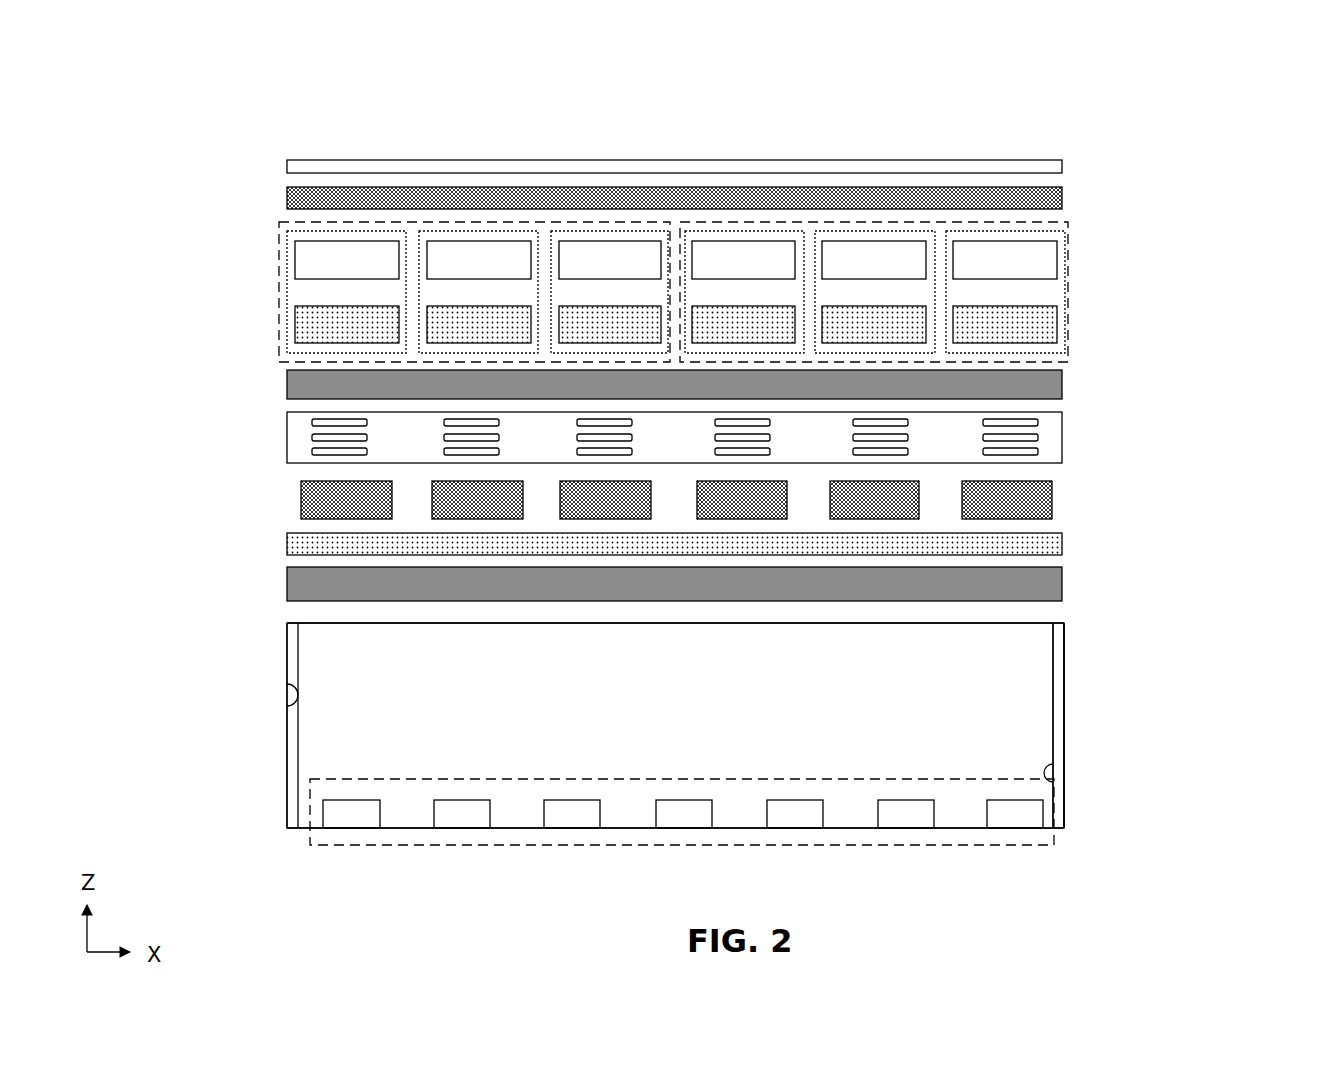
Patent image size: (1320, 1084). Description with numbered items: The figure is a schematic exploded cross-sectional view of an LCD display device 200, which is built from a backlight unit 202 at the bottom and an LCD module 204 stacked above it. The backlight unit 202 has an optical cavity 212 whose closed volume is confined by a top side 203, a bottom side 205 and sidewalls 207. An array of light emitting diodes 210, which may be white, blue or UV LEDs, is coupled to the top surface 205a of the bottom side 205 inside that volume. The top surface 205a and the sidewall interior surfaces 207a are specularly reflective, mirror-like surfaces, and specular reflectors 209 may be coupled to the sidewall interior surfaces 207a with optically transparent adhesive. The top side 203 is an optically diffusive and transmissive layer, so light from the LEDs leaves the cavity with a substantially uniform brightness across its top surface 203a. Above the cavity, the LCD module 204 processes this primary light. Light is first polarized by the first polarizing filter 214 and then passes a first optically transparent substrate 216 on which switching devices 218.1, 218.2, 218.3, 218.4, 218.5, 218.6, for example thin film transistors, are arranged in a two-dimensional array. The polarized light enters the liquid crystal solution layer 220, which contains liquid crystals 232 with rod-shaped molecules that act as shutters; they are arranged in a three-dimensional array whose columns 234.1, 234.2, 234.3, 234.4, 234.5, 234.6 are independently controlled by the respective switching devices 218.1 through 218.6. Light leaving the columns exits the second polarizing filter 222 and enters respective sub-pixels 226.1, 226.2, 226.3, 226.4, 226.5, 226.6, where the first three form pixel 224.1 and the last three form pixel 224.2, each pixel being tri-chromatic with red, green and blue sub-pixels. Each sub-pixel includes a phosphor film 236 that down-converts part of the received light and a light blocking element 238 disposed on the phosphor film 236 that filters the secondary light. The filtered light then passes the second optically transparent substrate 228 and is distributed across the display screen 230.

The LCD display device 200 is at (1195, 140).
The backlight unit 202 is at (1150, 626).
The top side 203 is at (305, 620).
The top surface 203a is at (560, 622).
The LCD module 204 is at (1150, 148).
The bottom side 205 is at (410, 838).
The top surface 205a is at (287, 812).
The sidewalls 207 is at (283, 742).
The sidewall interior surfaces 207a is at (287, 706).
The specular reflectors 209 is at (298, 648).
The array of light emitting diodes 210 is at (978, 778).
The optical cavity 212 is at (1070, 672).
The first polarizing filter 214 is at (1050, 583).
The first optically transparent substrate 216 is at (1050, 548).
The switching device 218.1 is at (346, 500).
The switching device 218.2 is at (477, 500).
The switching device 218.3 is at (605, 500).
The switching device 218.4 is at (742, 500).
The switching device 218.5 is at (874, 500).
The switching device 218.6 is at (1007, 500).
The liquid crystal solution layer 220 is at (1065, 435).
The second polarizing filter 222 is at (1045, 380).
The pixel 224.1 is at (279, 268).
The pixel 224.2 is at (1072, 268).
The red sub-pixel 226.1 is at (342, 230).
The green sub-pixel 226.2 is at (477, 230).
The blue sub-pixel 226.3 is at (607, 230).
The red sub-pixel 226.4 is at (742, 230).
The green sub-pixel 226.5 is at (873, 230).
The blue sub-pixel 226.6 is at (1004, 230).
The second optically transparent substrate 228 is at (1060, 195).
The display screen 230 is at (1050, 168).
The liquid crystals 232 is at (333, 452).
The column of liquid crystals 234.1 is at (309, 419).
The column of liquid crystals 234.2 is at (441, 419).
The column of liquid crystals 234.3 is at (574, 419).
The column of liquid crystals 234.4 is at (712, 419).
The column of liquid crystals 234.5 is at (850, 419).
The column of liquid crystals 234.6 is at (980, 419).
The phosphor film 236 is at (676, 324).
The light blocking element 238 is at (676, 260).